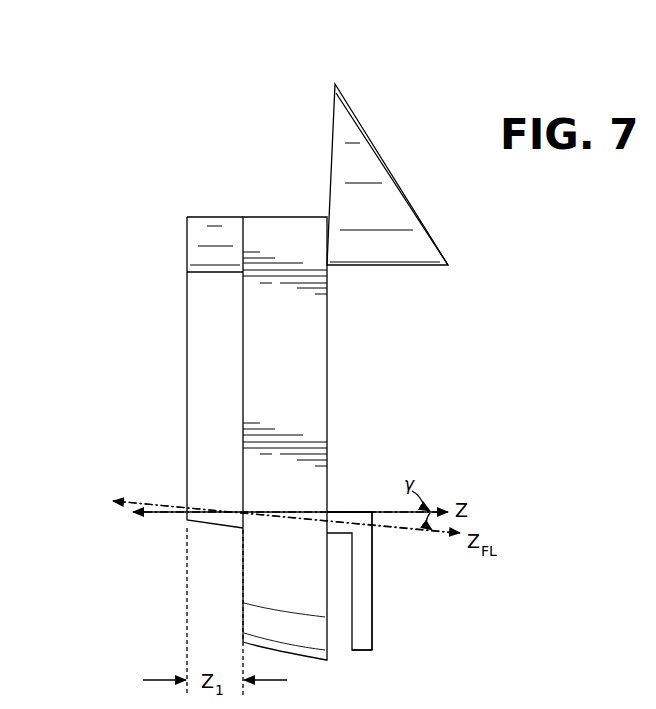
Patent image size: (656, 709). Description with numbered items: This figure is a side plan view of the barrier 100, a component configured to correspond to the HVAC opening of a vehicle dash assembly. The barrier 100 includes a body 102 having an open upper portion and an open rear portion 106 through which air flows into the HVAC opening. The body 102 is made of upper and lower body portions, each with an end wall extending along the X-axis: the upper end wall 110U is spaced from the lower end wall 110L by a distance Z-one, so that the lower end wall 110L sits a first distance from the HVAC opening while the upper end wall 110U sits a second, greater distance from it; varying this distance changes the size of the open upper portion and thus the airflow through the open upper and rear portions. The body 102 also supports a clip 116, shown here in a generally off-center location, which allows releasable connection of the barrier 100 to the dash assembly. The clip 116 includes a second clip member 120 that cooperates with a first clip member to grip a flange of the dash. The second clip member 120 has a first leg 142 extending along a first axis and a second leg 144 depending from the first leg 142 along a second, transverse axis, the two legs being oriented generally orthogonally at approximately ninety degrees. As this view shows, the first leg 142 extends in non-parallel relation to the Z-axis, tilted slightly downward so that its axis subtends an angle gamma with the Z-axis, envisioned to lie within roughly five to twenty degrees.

The barrier 100 is at (262, 113).
The body 102 is at (262, 213).
The open rear portion 106 is at (327, 357).
The upper end wall 110U is at (187, 378).
The lower end wall 110L is at (243, 572).
The clip 116 is at (398, 588).
The second clip member 120 is at (372, 635).
The first leg 142 is at (363, 510).
The second leg 144 is at (362, 652).